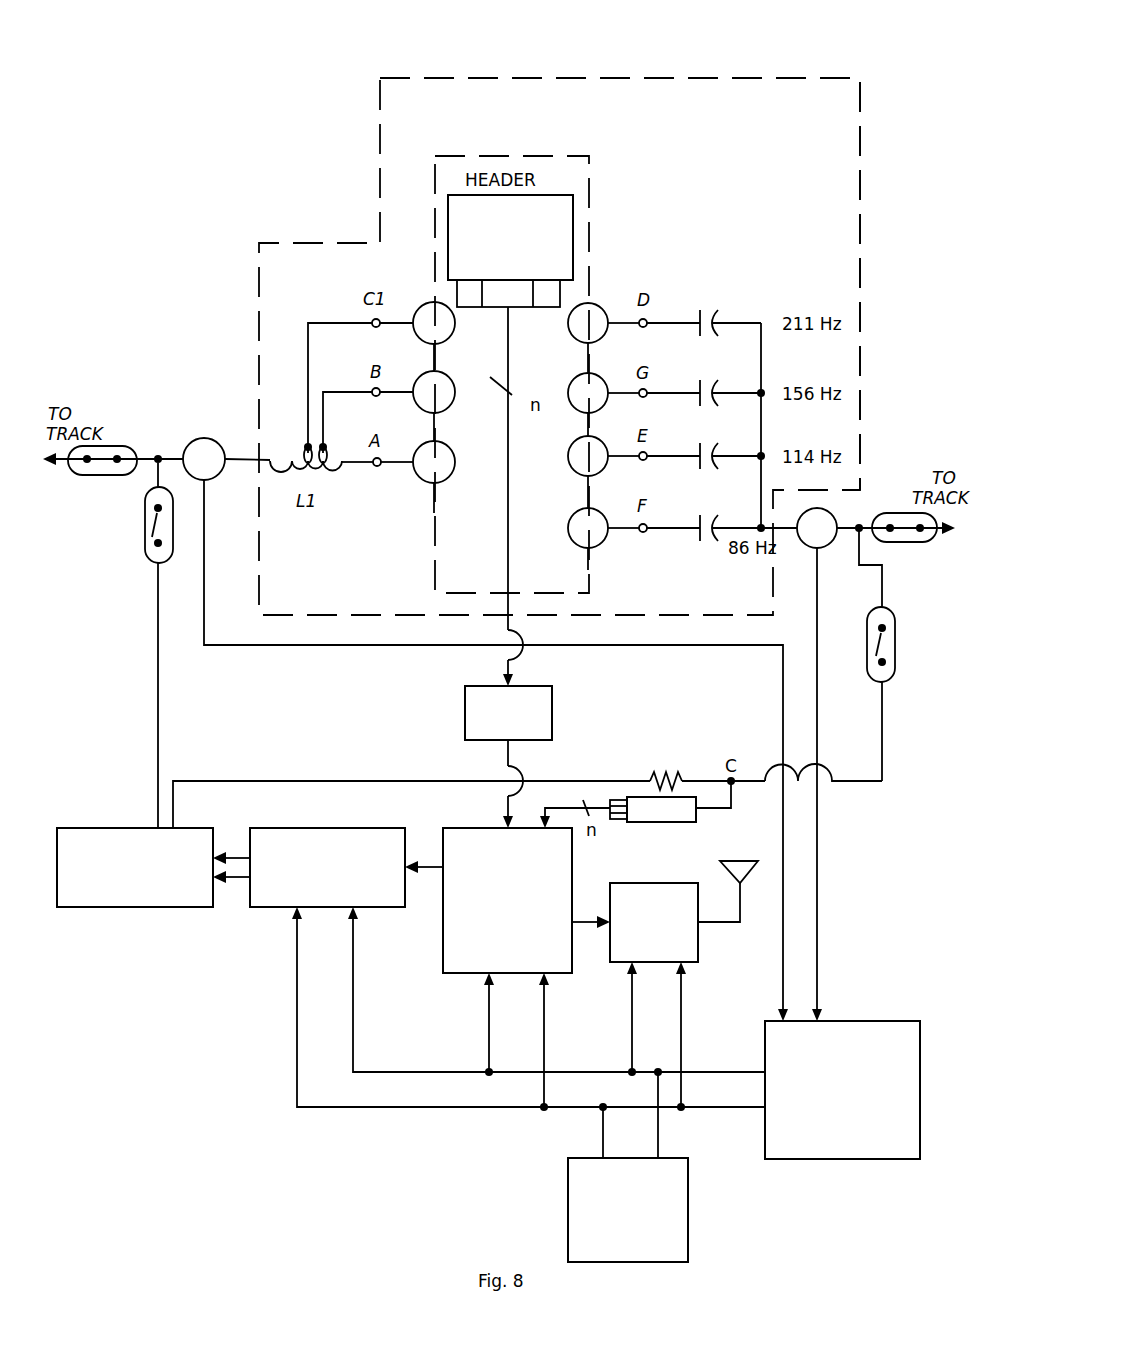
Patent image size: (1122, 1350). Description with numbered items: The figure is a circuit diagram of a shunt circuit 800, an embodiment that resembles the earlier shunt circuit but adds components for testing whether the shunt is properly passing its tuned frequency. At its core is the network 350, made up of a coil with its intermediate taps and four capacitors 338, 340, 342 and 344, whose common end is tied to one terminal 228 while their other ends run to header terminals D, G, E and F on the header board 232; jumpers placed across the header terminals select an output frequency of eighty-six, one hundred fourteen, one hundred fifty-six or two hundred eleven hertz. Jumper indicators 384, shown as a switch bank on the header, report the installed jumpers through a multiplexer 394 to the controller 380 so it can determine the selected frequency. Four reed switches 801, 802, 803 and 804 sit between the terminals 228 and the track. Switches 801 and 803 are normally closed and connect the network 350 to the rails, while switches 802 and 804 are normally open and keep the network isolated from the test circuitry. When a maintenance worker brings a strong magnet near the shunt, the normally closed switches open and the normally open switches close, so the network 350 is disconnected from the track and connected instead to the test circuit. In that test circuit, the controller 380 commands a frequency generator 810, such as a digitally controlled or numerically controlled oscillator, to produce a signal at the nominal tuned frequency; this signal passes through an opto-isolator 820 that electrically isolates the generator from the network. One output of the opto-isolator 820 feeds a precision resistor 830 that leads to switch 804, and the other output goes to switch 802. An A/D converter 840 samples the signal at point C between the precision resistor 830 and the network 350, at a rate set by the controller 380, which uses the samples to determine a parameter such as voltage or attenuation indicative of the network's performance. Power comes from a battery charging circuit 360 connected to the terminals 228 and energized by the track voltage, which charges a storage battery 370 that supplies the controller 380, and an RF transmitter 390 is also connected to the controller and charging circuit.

The circuit 800 is at (262, 150).
The network 350 is at (653, 72).
The jumper indicators 384 is at (573, 247).
The header board 232 is at (457, 553).
The capacitor 338 is at (710, 307).
The capacitor 340 is at (710, 383).
The capacitor 342 is at (710, 447).
The capacitor 344 is at (710, 510).
The terminal 228 is at (204, 437).
The reed switch 801 is at (113, 445).
The reed switch 802 is at (147, 500).
The reed switch 803 is at (893, 543).
The reed switch 804 is at (895, 650).
The multiplexer 394 is at (465, 686).
The precision resistor 830 is at (667, 773).
The A/D converter 840 is at (687, 822).
The controller 380 is at (480, 828).
The RF transmitter 390 is at (615, 883).
The frequency generator 810 is at (360, 828).
The opto-isolator 820 is at (135, 828).
The battery charging circuit 360 is at (887, 1021).
The storage battery 370 is at (688, 1187).